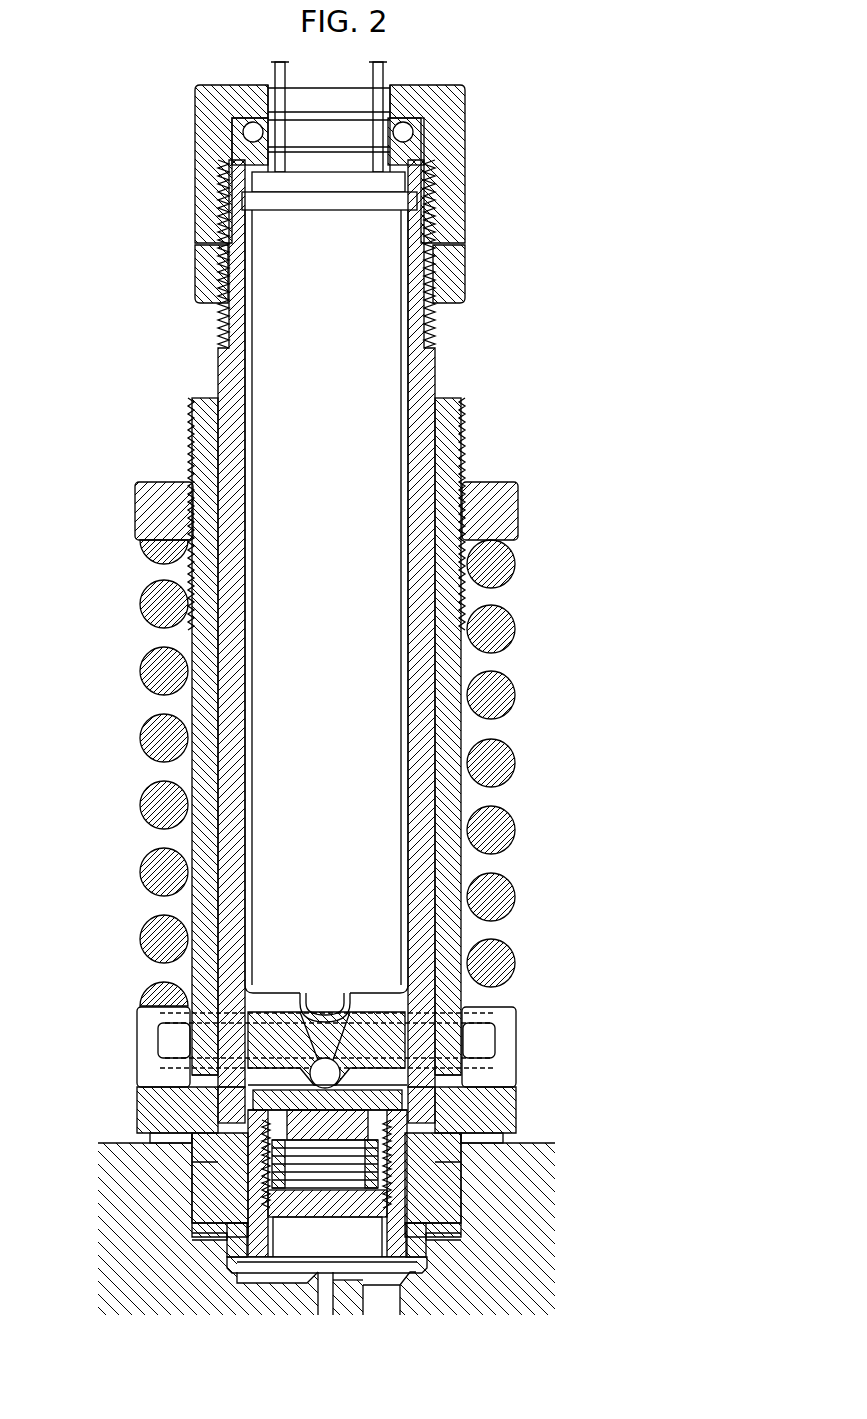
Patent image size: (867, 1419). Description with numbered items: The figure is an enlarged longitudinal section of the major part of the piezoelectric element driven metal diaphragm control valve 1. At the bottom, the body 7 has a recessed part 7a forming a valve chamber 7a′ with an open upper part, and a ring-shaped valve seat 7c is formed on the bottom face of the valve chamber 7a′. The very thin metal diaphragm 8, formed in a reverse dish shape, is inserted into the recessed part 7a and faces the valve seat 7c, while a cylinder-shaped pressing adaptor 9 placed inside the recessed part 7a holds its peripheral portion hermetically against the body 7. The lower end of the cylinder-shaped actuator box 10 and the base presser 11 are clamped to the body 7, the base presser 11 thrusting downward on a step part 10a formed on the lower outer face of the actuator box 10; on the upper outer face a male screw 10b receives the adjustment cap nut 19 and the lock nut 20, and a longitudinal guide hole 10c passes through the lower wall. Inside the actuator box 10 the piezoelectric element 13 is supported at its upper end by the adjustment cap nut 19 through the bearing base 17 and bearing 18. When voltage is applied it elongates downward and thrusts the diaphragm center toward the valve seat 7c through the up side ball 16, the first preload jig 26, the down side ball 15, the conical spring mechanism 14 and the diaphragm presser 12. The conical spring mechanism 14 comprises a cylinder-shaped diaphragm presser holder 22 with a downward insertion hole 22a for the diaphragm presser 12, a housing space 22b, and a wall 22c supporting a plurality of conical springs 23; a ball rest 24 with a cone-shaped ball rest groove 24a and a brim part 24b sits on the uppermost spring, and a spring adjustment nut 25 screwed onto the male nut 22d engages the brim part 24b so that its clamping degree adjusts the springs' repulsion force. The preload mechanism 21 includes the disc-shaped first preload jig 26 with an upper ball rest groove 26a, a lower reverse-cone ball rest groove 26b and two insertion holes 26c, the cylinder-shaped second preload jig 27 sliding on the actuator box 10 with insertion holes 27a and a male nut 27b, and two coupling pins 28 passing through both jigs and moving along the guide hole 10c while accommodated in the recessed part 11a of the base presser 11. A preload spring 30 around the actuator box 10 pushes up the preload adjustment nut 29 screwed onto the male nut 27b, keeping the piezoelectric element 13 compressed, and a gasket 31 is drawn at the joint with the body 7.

The piezoelectric element driven metal diaphragm control valve 1 is at (637, 482).
The body 7 is at (306, 1249).
The recessed part 7a is at (200, 1190).
The valve chamber 7a′ is at (276, 1282).
The valve seat 7c is at (342, 1282).
The metal diaphragm 8 is at (382, 1290).
The pressing adaptor 9 is at (238, 1268).
The actuator box 10 is at (425, 732).
The step part 10a is at (455, 1175).
The male screw 10b is at (432, 318).
The longitudinal guide hole 10c is at (430, 1020).
The base presser 11 is at (165, 1105).
The recessed part 11a is at (162, 1040).
The diaphragm presser 12 is at (306, 1240).
The piezoelectric element 13 is at (325, 425).
The conical spring mechanism 14 is at (343, 1071).
The down side ball 15 is at (134, 1036).
The up side ball 16 is at (326, 1008).
The bearing base 17 is at (410, 160).
The bearing 18 is at (406, 132).
The adjustment cap nut 19 is at (212, 172).
The lock nut 20 is at (212, 277).
The preload mechanism 21 is at (310, 773).
The diaphragm presser holder 22 is at (354, 1192).
The insertion hole 22a is at (400, 1268).
The housing space 22b is at (400, 1118).
The wall 22c is at (380, 1235).
The male nut 22d is at (395, 1165).
The conical springs 23 is at (275, 1165).
The ball rest 24 is at (280, 1095).
The ball rest groove 24a is at (420, 1086).
The brim part 24b is at (235, 1118).
The spring adjustment nut 25 is at (385, 1195).
The No. 1 preload jig 26 is at (326, 1003).
The ball rest groove 26a is at (302, 1000).
The ball rest groove 26b is at (345, 1000).
The insertion holes 26c is at (440, 1040).
The No. 2 preload jig 27 is at (205, 770).
The insertion holes 27a is at (190, 1012).
The male nut 27b is at (188, 458).
The coupling pins 28 is at (480, 1040).
The preload adjustment nut 29 is at (485, 507).
The preload spring 30 is at (495, 885).
The gasket 31 is at (150, 1140).